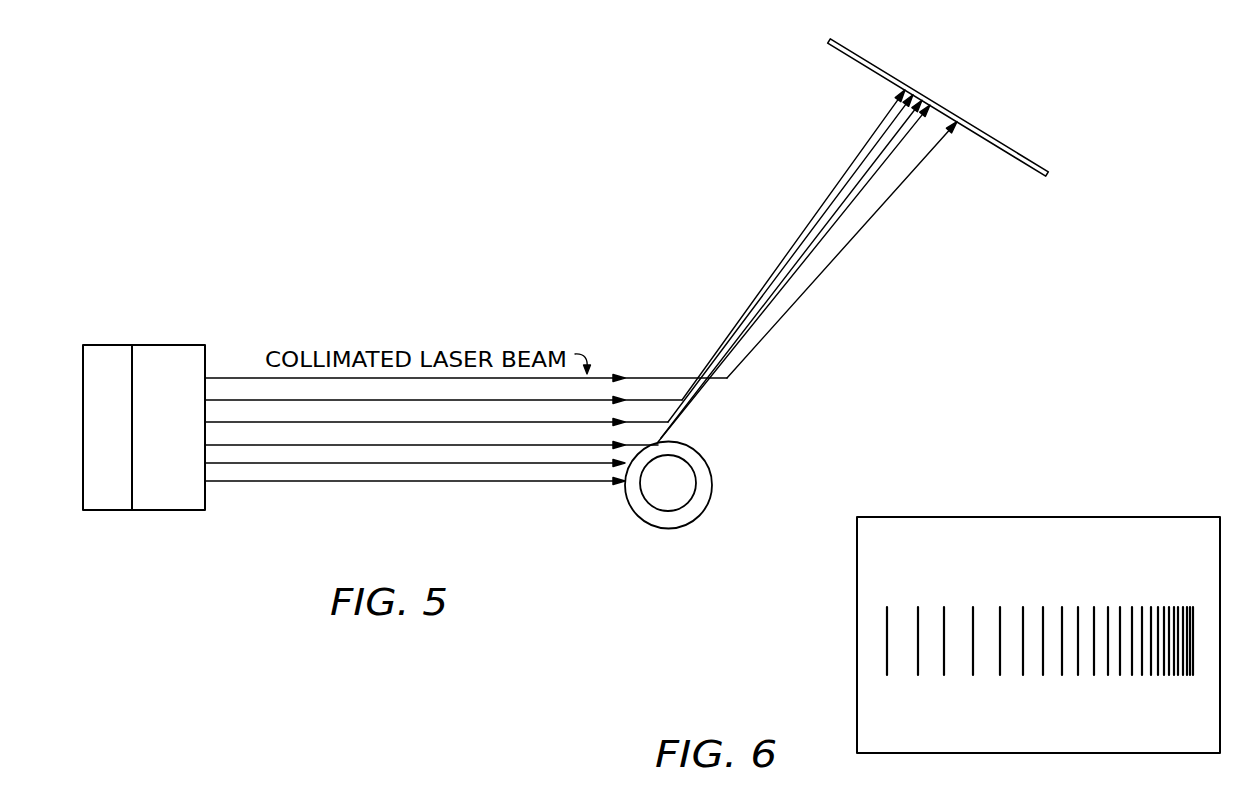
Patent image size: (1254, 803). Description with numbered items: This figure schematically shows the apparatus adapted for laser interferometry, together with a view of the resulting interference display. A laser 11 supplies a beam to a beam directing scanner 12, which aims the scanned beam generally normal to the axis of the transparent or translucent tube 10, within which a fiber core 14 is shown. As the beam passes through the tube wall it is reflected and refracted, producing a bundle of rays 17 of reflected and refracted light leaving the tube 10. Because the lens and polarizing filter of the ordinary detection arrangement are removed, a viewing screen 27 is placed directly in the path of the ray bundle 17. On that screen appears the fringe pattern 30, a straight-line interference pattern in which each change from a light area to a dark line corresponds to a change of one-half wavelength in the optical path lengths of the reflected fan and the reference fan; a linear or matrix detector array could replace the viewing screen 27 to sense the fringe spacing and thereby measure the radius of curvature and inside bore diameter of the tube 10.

In FIG. 5, the tube 10 is at (705, 502).
In FIG. 5, the laser 11 is at (117, 349).
In FIG. 5, the beam directing scanner 12 is at (180, 349).
In FIG. 5, the fiber core 14 is at (653, 511).
In FIG. 5, the bundle of rays 17 is at (707, 410).
In FIG. 5, the viewing screen 27 is at (1008, 145).
In FIG. 6, the viewing screen 27 is at (1030, 517).
In FIG. 6, the fringe pattern 30 is at (1015, 603).